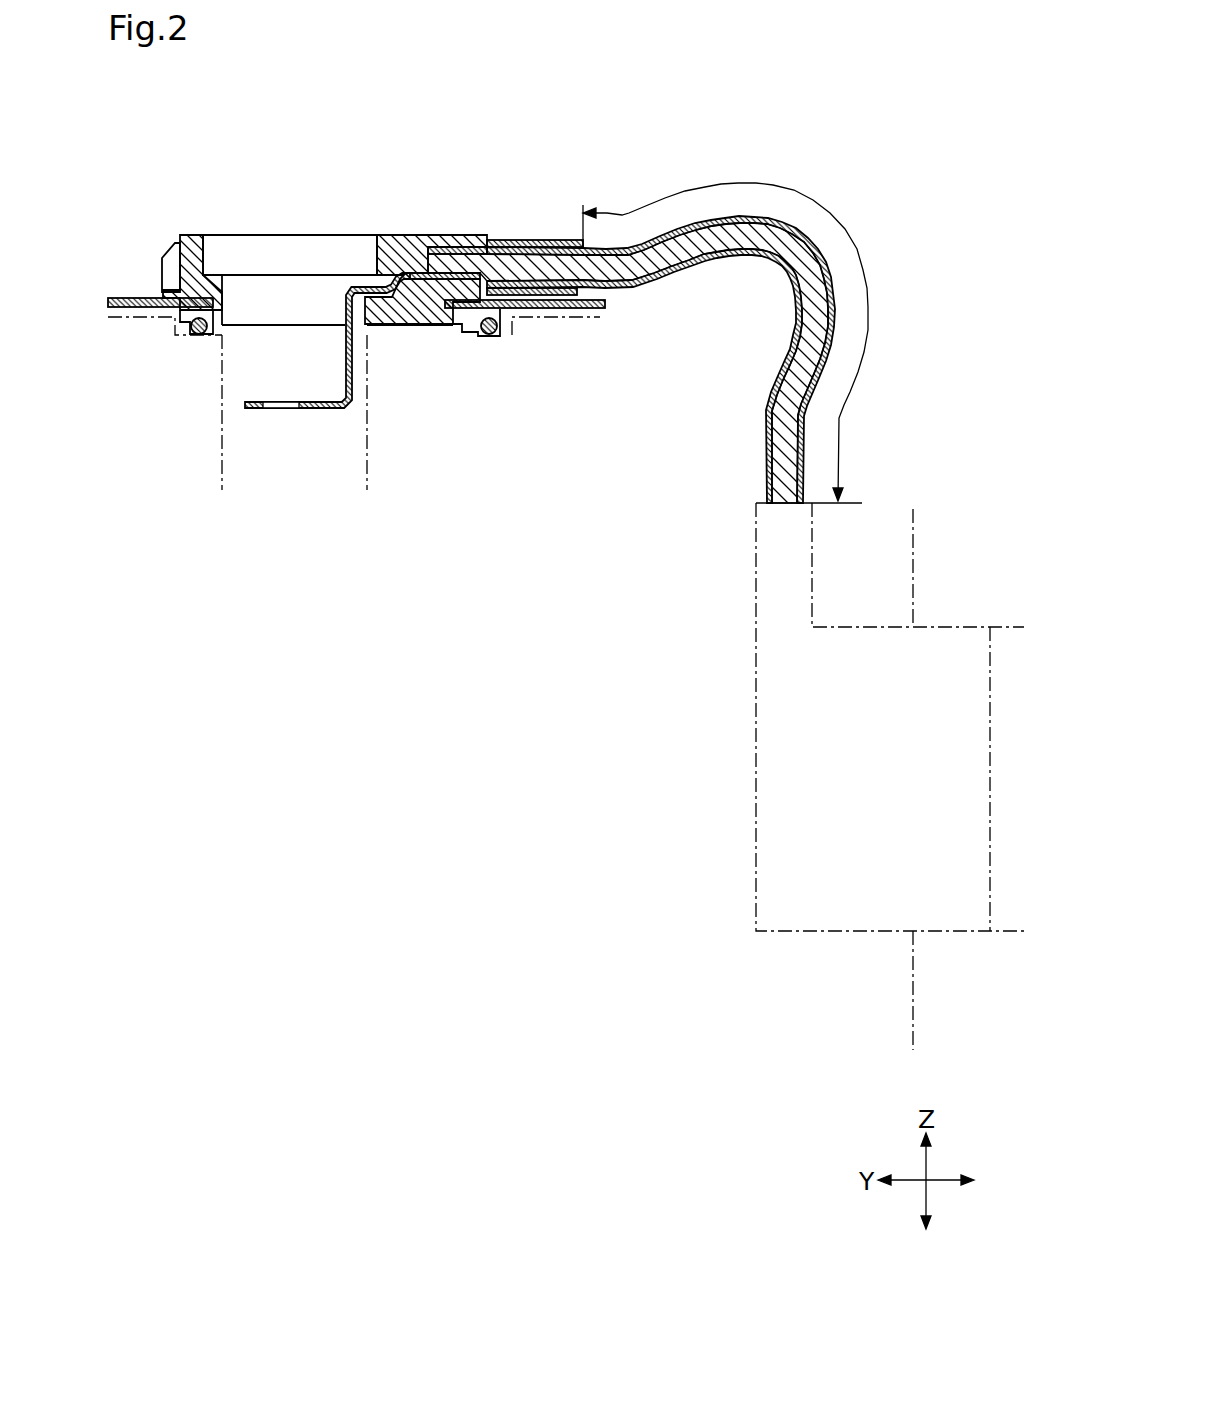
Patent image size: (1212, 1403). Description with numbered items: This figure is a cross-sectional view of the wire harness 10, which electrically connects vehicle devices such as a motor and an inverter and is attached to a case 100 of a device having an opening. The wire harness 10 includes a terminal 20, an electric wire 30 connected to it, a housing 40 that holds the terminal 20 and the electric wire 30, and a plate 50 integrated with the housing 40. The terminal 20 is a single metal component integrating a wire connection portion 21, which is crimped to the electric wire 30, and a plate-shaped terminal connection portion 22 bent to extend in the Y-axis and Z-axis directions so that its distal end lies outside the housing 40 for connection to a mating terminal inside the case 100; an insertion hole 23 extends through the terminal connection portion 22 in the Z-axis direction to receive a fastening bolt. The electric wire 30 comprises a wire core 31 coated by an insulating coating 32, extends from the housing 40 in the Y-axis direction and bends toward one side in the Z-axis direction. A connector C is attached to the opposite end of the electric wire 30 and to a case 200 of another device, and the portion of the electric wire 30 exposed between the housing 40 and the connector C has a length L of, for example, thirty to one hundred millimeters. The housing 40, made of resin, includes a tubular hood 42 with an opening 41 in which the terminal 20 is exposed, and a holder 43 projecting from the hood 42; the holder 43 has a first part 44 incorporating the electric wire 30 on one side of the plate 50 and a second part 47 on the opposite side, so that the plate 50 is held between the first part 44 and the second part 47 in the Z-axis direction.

The wire harness 10 is at (442, 167).
The terminal 20 is at (340, 302).
The wire connection portion 21 is at (432, 246).
The terminal connection portion 22 is at (316, 411).
The insertion hole 23 is at (298, 403).
The electric wire 30 is at (631, 315).
The wire core 31 is at (512, 266).
The insulating coating 32 is at (548, 246).
The housing 40 is at (397, 236).
The opening 41 is at (204, 250).
The hood 42 is at (190, 238).
The holder 43 is at (482, 239).
The first part 44 is at (497, 332).
The second part 47 is at (461, 322).
The plate 50 is at (588, 310).
The case 100 is at (563, 312).
The case 200 is at (913, 545).
The length L is at (843, 216).
The connector C is at (756, 690).